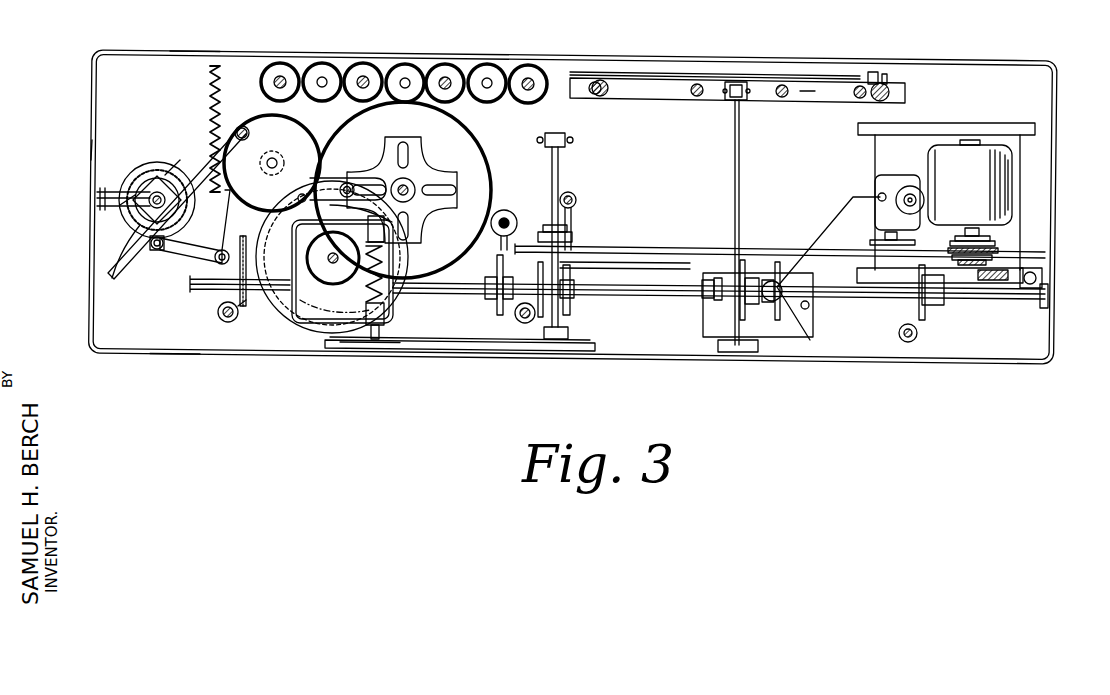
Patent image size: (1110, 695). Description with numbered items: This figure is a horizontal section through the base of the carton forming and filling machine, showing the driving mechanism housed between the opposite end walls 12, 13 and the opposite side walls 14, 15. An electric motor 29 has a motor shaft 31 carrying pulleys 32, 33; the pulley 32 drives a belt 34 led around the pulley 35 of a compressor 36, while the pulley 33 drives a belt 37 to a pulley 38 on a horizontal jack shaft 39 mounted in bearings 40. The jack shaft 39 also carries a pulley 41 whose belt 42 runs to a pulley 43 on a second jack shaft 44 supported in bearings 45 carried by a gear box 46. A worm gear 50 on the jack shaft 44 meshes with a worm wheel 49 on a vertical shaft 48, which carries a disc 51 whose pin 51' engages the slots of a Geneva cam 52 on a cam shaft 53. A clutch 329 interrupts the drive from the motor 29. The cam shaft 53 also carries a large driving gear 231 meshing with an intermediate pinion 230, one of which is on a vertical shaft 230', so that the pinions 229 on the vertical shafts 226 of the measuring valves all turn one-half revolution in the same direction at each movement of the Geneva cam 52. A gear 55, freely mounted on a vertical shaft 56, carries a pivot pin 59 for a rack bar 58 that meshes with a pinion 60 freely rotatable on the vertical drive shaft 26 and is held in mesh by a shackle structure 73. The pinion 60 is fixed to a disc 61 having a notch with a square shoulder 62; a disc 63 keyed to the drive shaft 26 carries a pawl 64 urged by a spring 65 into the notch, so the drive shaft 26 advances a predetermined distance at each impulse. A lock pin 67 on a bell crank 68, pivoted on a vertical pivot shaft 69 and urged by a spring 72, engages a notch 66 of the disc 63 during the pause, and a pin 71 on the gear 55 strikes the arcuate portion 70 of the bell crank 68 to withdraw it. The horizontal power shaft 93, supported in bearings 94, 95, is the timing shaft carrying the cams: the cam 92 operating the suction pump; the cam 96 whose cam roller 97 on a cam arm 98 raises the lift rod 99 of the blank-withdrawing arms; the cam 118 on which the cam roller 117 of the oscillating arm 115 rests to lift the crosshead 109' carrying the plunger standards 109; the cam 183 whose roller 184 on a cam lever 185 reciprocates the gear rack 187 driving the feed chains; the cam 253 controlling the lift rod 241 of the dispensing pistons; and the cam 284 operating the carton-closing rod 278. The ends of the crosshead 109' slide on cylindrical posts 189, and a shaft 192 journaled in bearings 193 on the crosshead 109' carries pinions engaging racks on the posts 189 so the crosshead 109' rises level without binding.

The end wall 12 is at (1058, 180).
The end wall 13 is at (92, 122).
The side wall 14 is at (185, 51).
The side wall 15 is at (165, 354).
The vertical drive shaft 26 is at (150, 196).
The electric motor 29 is at (995, 172).
The motor shaft 31 is at (985, 234).
The pulley 32 is at (990, 246).
The pulley 33 is at (995, 262).
The belt 34 is at (918, 244).
The compressor pulley 35 is at (885, 238).
The compressor 36 is at (880, 210).
The belt 37 is at (795, 252).
The pulley 38 is at (585, 248).
The jack shaft 39 is at (560, 158).
The bearings 40 is at (566, 140).
The pulley 41 is at (575, 350).
The belt 42 is at (478, 330).
The pulley 43 is at (405, 348).
The jack shaft 44 is at (380, 332).
The bearings 45 is at (366, 310).
The gear box 46 is at (310, 323).
The vertical shaft 48 is at (336, 264).
The worm wheel 49 is at (333, 256).
The worm gear 50 is at (384, 262).
The disc 51 is at (329, 260).
The pin 51' is at (351, 183).
The Geneva cam 52 is at (420, 172).
The cam shaft 53 is at (412, 200).
The gear 55 is at (310, 160).
The vertical shaft 56 is at (272, 168).
The rack bar 58 is at (215, 155).
The pivot pin 59 is at (243, 140).
The pinion 60 is at (165, 170).
The disc 61 is at (162, 178).
The square shoulder 62 is at (176, 185).
The disc 63 is at (158, 175).
The pawl 64 is at (150, 205).
The spring 65 is at (140, 188).
The notch 66 is at (160, 252).
The lock pin 67 is at (152, 248).
The bell crank 68 is at (195, 258).
The vertical pivot shaft 69 is at (221, 250).
The arcuate portion 70 is at (260, 163).
The pin 71 is at (302, 194).
The spring 72 is at (208, 110).
The shackle structure 73 is at (130, 225).
The cam 92 is at (785, 300).
The power shaft 93 is at (448, 282).
The bearing 94 is at (705, 296).
The bearing 95 is at (1042, 310).
The cam 96 is at (930, 318).
The cam roller 97 is at (980, 300).
The cam arm 98 is at (919, 315).
The lift rod 99 is at (918, 335).
The lift rod 109 is at (727, 104).
The crosshead 109' is at (816, 109).
The oscillating arm 115 is at (740, 163).
The cam roller 117 is at (744, 262).
The cam 118 is at (760, 312).
The cam 183 is at (570, 305).
The roller 184 is at (590, 270).
The cam lever 185 is at (580, 256).
The gear rack 187 is at (576, 208).
The cylindrical posts 189 is at (600, 82).
The shaft 192 is at (708, 80).
The bearings 193 is at (650, 78).
The vertical shafts 226 is at (322, 82).
The pinion 229 is at (262, 62).
The intermediate pinion 230 is at (414, 55).
The vertical shaft 230' is at (461, 64).
The large driving gear 231 is at (452, 124).
The lift rod 241 is at (506, 208).
The cam 253 is at (496, 305).
The operating rod 278 is at (227, 322).
The cam 284 is at (243, 236).
The clutch 329 is at (538, 236).